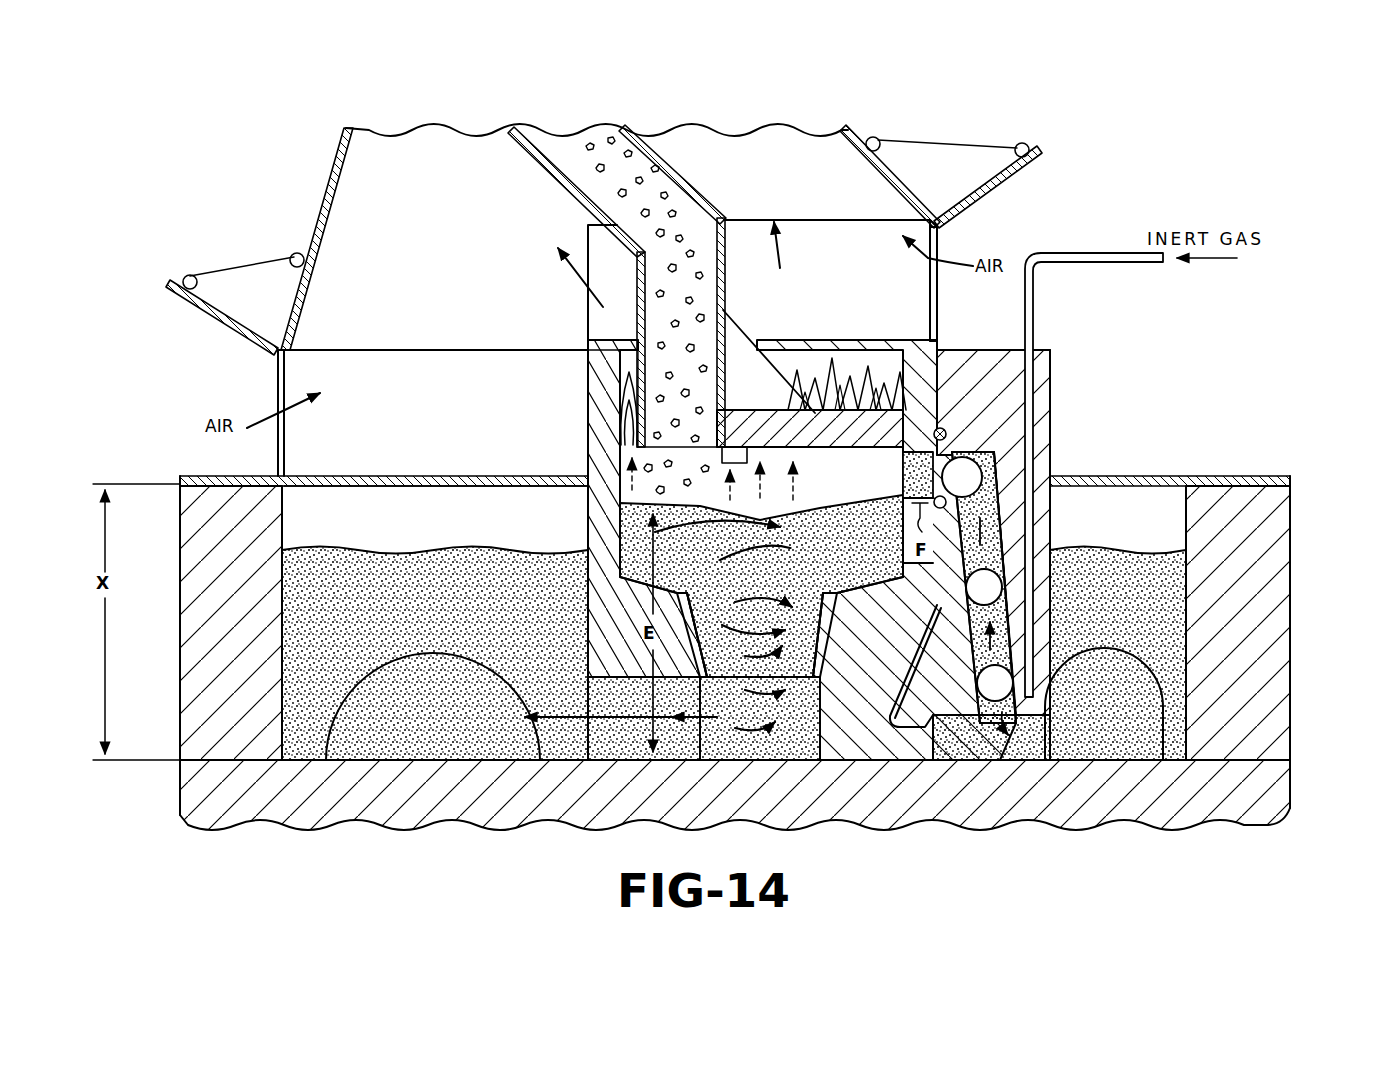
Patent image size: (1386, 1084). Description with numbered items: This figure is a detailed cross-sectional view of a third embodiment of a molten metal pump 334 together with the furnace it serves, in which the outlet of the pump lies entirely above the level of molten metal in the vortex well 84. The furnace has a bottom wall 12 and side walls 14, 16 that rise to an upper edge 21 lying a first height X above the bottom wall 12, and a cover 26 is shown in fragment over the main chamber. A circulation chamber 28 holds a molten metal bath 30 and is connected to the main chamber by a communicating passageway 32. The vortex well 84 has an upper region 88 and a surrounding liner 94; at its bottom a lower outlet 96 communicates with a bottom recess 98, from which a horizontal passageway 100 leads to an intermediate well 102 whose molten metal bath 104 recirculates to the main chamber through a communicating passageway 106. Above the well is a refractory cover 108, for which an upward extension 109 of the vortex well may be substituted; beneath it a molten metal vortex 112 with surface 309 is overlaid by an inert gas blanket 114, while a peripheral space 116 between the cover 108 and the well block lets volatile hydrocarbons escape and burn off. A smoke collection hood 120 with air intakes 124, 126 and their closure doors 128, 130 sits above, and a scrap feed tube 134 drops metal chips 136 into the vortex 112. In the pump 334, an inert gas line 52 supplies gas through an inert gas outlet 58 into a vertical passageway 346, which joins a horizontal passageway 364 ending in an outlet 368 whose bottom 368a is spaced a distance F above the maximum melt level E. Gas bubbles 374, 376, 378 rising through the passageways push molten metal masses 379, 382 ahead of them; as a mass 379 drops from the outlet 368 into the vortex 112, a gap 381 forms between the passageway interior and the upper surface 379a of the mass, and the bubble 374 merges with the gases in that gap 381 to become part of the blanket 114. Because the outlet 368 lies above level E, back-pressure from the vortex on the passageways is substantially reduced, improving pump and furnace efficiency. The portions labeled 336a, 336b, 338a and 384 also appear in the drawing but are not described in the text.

The bottom wall 12 is at (1255, 822).
The side wall 14 is at (180, 667).
The side wall 16 is at (1292, 795).
The upper edge 21 is at (214, 474).
The cover 26 is at (378, 475).
The circulation chamber 28 is at (1162, 510).
The molten metal bath 30 is at (1175, 745).
The communicating passageway 32 is at (1142, 762).
The inert gas line 52 is at (1120, 262).
The inert gas outlet 58 is at (1022, 724).
The vortex well 84 is at (777, 470).
The upper region 88 is at (618, 530).
The liner 94 is at (826, 637).
The lower outlet 96 is at (808, 690).
The bottom recess 98 is at (790, 745).
The horizontal passageway 100 is at (627, 738).
The intermediate well 102 is at (408, 514).
The molten metal bath 104 is at (312, 640).
The communicating passageway 106 is at (340, 706).
The refractory cover 108 is at (752, 418).
The upward extension of the vortex well 109 is at (813, 240).
The molten metal vortex 112 is at (612, 517).
The inert gas blanket 114 is at (812, 474).
The peripheral space 116 is at (630, 452).
The smoke collection hood 120 is at (326, 192).
The air intake 124 is at (280, 381).
The air intake 126 is at (938, 242).
The closure door 128 is at (219, 312).
The closure door 130 is at (996, 196).
The scrap feed tube 134 is at (679, 175).
The metal chips 136 is at (590, 178).
The surface of the molten metal 309 is at (620, 414).
The molten metal pump 334 is at (1062, 369).
The upper block portion 336a is at (985, 348).
The lower block portion 336b is at (952, 727).
The plate 338a is at (602, 340).
The vertical passageway 346 is at (1004, 511).
The horizontal passageway 364 is at (902, 503).
The outlet 368 is at (906, 468).
The bottom of outlet 368a is at (960, 454).
The gas bubble 374 is at (982, 470).
The gas bubble 376 is at (990, 588).
The gas bubble 378 is at (1010, 683).
The metal mass 379 is at (948, 432).
The upper surface of molten metal mass 379a is at (935, 499).
The gap 381 is at (848, 412).
The molten metal mass 382 is at (1008, 638).
The channel wall 384 is at (994, 535).